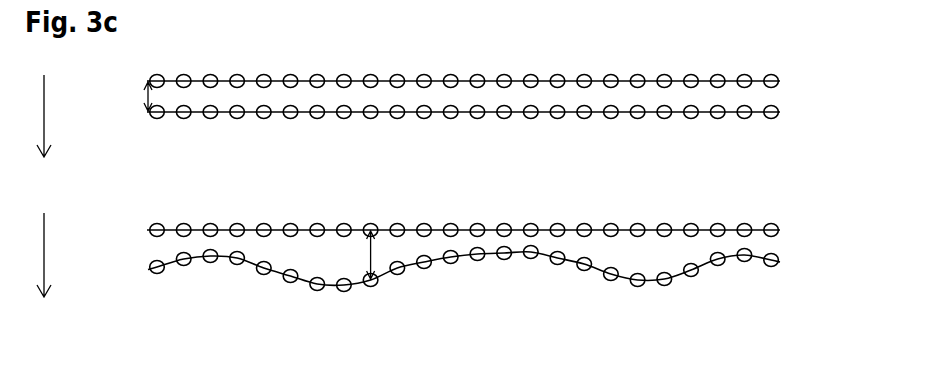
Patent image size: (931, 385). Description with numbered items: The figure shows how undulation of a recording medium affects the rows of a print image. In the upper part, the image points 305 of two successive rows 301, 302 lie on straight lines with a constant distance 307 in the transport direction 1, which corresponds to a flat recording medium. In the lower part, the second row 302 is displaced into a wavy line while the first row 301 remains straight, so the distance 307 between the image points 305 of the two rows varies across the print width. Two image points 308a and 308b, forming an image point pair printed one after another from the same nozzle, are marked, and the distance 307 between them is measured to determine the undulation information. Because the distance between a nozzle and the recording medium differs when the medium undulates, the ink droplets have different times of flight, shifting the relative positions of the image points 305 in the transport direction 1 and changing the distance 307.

The transport direction 1 is at (44, 104).
The first row 301 is at (781, 80).
The second row 302 is at (781, 113).
The image point 305 is at (213, 118).
The distance 307 is at (141, 97).
The image point 308a is at (370, 223).
The image point 308b is at (370, 287).